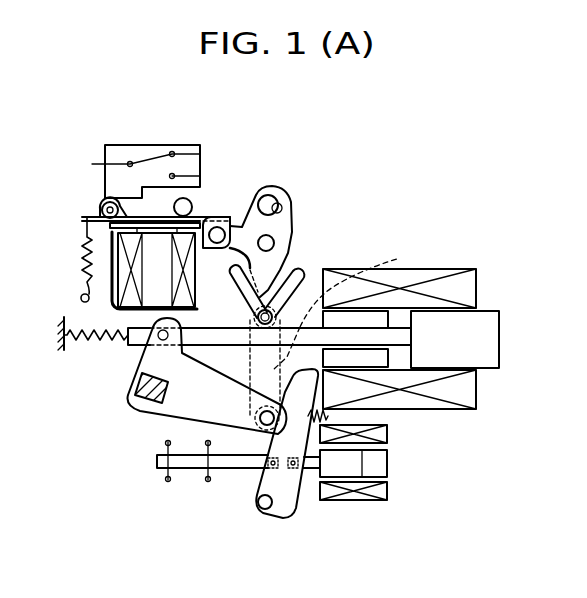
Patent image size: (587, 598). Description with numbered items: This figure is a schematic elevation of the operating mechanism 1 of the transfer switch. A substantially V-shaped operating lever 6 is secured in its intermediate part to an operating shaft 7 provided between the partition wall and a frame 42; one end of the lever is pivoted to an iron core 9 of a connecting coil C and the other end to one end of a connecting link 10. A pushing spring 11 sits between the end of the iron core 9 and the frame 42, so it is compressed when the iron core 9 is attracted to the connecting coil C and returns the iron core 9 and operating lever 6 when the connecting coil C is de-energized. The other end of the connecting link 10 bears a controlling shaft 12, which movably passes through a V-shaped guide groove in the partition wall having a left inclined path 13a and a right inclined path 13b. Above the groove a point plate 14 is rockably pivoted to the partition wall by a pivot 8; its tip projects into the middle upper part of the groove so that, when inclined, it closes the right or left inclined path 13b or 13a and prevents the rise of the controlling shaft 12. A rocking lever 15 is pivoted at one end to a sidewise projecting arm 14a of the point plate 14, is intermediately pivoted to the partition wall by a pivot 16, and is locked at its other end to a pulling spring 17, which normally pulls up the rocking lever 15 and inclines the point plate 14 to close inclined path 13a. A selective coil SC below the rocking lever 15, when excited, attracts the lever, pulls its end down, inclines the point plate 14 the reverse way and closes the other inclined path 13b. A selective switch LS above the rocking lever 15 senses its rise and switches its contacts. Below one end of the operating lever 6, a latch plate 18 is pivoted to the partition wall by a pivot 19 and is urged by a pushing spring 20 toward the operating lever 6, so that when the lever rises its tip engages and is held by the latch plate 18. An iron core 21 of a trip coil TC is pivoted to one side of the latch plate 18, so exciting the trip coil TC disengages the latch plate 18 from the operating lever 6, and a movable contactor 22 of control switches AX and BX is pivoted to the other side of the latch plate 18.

The operating mechanism 1 is at (337, 199).
The operating lever 6 is at (150, 364).
The operating shaft 7 is at (148, 396).
The pivot 8 is at (276, 233).
The iron core 9 is at (213, 338).
The connecting link 10 is at (411, 303).
The pushing spring 11 is at (90, 347).
The controlling shaft 12 is at (292, 268).
The left inclined path 13a is at (236, 268).
The right inclined path 13b is at (322, 259).
The point plate 14 is at (284, 218).
The sidewise projecting arm 14a is at (243, 226).
The rocking lever 15 is at (143, 217).
The pivot 16 is at (103, 208).
The pulling spring 17 is at (83, 236).
The latch plate 18 is at (285, 486).
The pivot 19 is at (266, 506).
The pushing spring 20 is at (330, 417).
The iron core 21 is at (343, 468).
The movable contactor 22 is at (238, 470).
The frame 42 is at (60, 333).
The control switch AX is at (168, 482).
The control switch BX is at (208, 482).
The connecting coil C is at (478, 289).
The selective switch LS is at (146, 160).
The selective coil SC is at (124, 272).
The trip coil TC is at (378, 461).